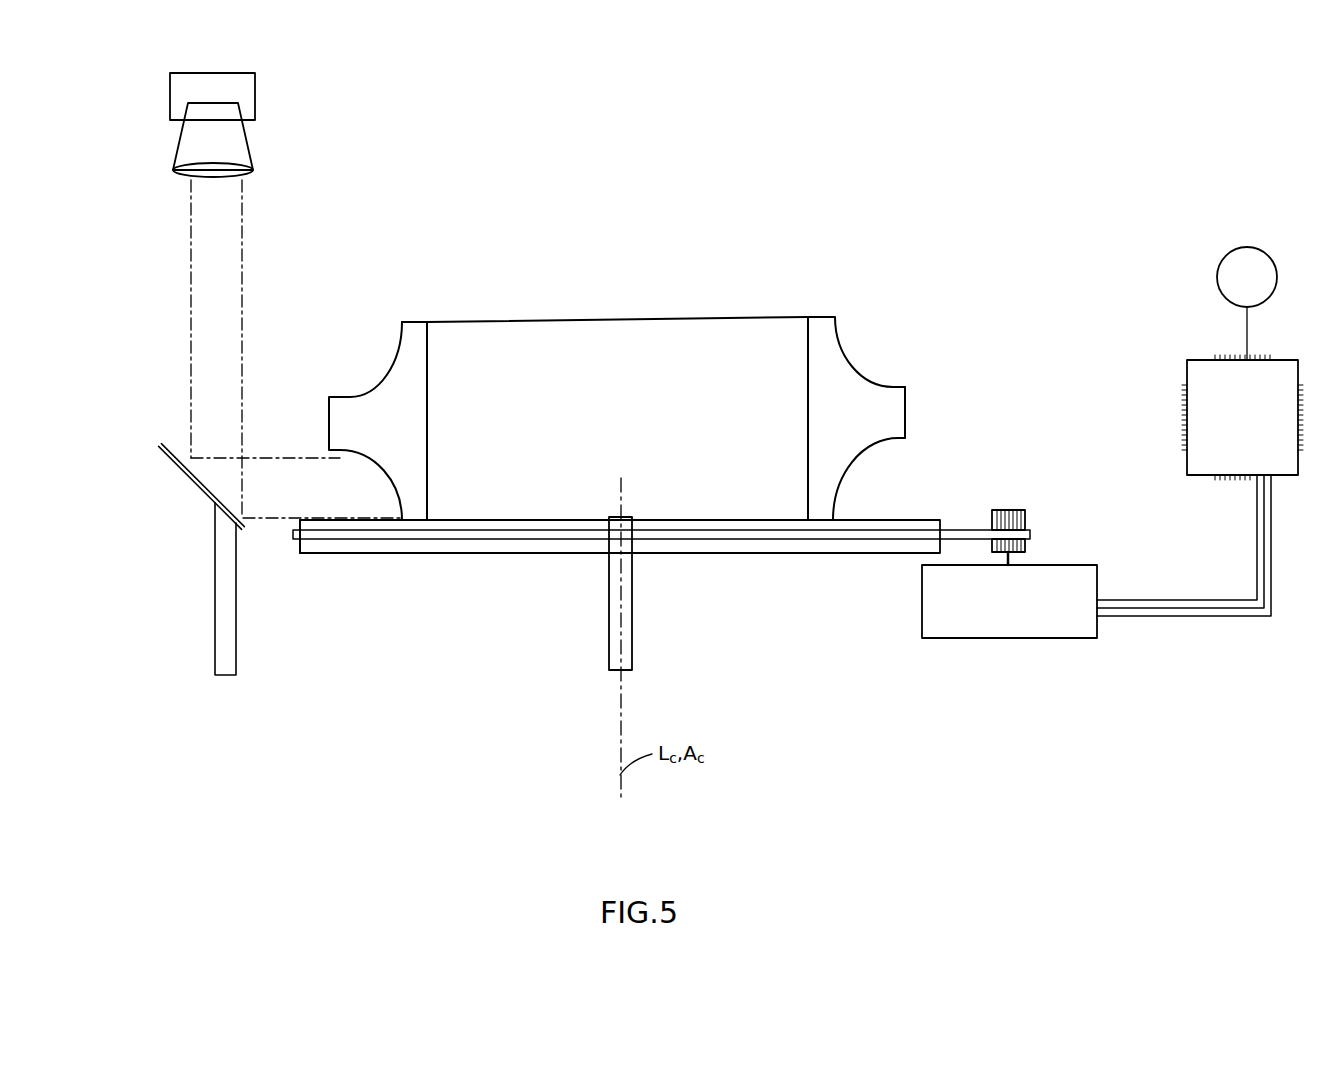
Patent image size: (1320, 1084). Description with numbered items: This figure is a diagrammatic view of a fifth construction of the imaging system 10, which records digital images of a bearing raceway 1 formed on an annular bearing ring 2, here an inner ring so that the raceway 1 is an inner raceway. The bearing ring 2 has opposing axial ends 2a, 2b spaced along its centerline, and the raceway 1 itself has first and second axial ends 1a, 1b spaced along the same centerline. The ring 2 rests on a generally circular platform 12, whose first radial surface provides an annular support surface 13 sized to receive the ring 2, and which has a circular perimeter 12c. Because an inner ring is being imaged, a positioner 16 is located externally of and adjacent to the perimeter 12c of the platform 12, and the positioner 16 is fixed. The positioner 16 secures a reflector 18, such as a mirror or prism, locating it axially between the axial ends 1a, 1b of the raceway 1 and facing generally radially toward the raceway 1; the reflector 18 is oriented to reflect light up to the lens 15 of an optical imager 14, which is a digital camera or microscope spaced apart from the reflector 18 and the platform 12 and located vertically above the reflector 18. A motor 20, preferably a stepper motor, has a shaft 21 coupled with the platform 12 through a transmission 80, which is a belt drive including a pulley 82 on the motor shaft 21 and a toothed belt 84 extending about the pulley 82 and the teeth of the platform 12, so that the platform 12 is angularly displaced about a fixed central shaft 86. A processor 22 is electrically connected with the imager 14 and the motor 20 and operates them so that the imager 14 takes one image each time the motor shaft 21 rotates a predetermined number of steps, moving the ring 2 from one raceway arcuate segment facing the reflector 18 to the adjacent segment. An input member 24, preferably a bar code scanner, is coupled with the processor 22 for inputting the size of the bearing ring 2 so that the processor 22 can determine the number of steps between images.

The bearing raceway 1 is at (856, 357).
The first axial end of raceway 1a is at (905, 440).
The second axial end of raceway 1b is at (843, 521).
The annular bearing ring 2 is at (388, 320).
The first axial end of bearing ring 2a is at (420, 322).
The second axial end of bearing ring 2b is at (422, 524).
The imaging system 10 is at (1003, 290).
The platform 12 is at (786, 576).
The circular perimeter of platform 12c is at (298, 554).
The annular support surface 13 is at (437, 520).
The optical imager 14 is at (255, 96).
The lens 15 is at (232, 176).
The positioner 16 is at (204, 604).
The reflector 18 is at (186, 478).
The motor 20 is at (1023, 625).
The motor shaft 21 is at (1012, 558).
The processor 22 is at (1205, 382).
The input member 24 is at (1240, 265).
The transmission 80 is at (1009, 571).
The pulley 82 is at (1025, 515).
The toothed belt 84 is at (962, 530).
The fixed central shaft 86 is at (634, 618).